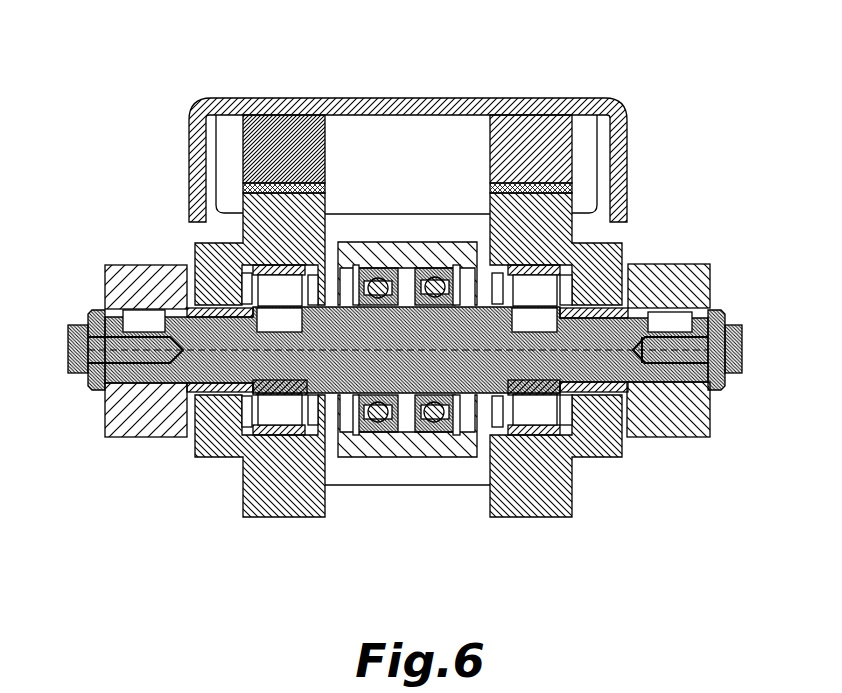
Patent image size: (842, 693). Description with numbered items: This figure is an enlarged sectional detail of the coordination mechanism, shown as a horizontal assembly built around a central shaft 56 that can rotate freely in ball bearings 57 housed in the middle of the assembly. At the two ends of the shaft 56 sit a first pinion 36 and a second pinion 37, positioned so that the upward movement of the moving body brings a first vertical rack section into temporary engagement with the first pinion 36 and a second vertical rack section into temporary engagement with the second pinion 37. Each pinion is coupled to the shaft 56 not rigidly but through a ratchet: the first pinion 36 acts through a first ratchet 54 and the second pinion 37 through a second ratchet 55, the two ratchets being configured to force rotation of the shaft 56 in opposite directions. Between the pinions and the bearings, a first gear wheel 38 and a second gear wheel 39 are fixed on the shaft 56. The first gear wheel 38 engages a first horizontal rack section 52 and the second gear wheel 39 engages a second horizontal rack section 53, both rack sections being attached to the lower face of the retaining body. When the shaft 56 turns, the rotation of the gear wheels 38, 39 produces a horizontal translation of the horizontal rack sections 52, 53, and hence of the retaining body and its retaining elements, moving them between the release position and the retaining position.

The first pinion 36 is at (670, 418).
The second pinion 37 is at (142, 413).
The first gear wheel 38 is at (523, 490).
The second gear wheel 39 is at (275, 478).
The first horizontal rack section 52 is at (533, 147).
The second horizontal rack section 53 is at (283, 138).
The first ratchet 54 is at (672, 322).
The second ratchet 55 is at (135, 322).
The shaft 56 is at (600, 358).
The ball bearings 57 is at (378, 437).